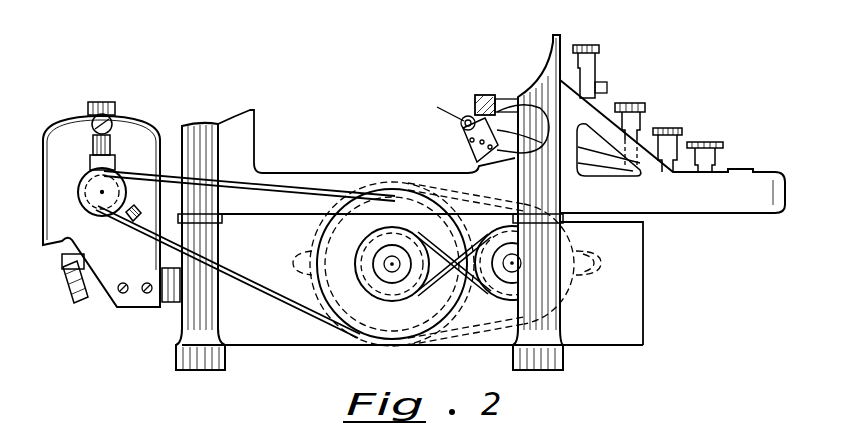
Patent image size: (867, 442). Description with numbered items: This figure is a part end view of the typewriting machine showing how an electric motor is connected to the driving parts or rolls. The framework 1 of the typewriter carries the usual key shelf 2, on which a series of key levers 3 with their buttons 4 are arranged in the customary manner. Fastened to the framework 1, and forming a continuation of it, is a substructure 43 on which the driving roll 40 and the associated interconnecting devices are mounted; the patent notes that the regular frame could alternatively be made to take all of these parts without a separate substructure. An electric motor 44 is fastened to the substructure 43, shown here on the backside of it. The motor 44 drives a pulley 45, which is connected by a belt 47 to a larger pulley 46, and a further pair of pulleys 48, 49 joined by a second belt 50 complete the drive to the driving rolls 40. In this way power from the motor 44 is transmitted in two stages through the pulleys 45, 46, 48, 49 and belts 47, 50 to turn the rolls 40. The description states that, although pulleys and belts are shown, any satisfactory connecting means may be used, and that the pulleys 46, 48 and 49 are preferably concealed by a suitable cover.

The framework 1 is at (237, 157).
The key shelf 2 is at (716, 200).
The key levers 3 is at (611, 155).
The buttons 4 is at (637, 103).
The driving rolls 40 is at (510, 266).
The substructure 43 is at (630, 316).
The electric motor 44 is at (60, 193).
The pulley 45 is at (95, 192).
The pulley 46 is at (337, 247).
The belt 47 is at (263, 290).
The pulley 48 is at (403, 238).
The pulley 49 is at (542, 258).
The belt 50 is at (472, 247).